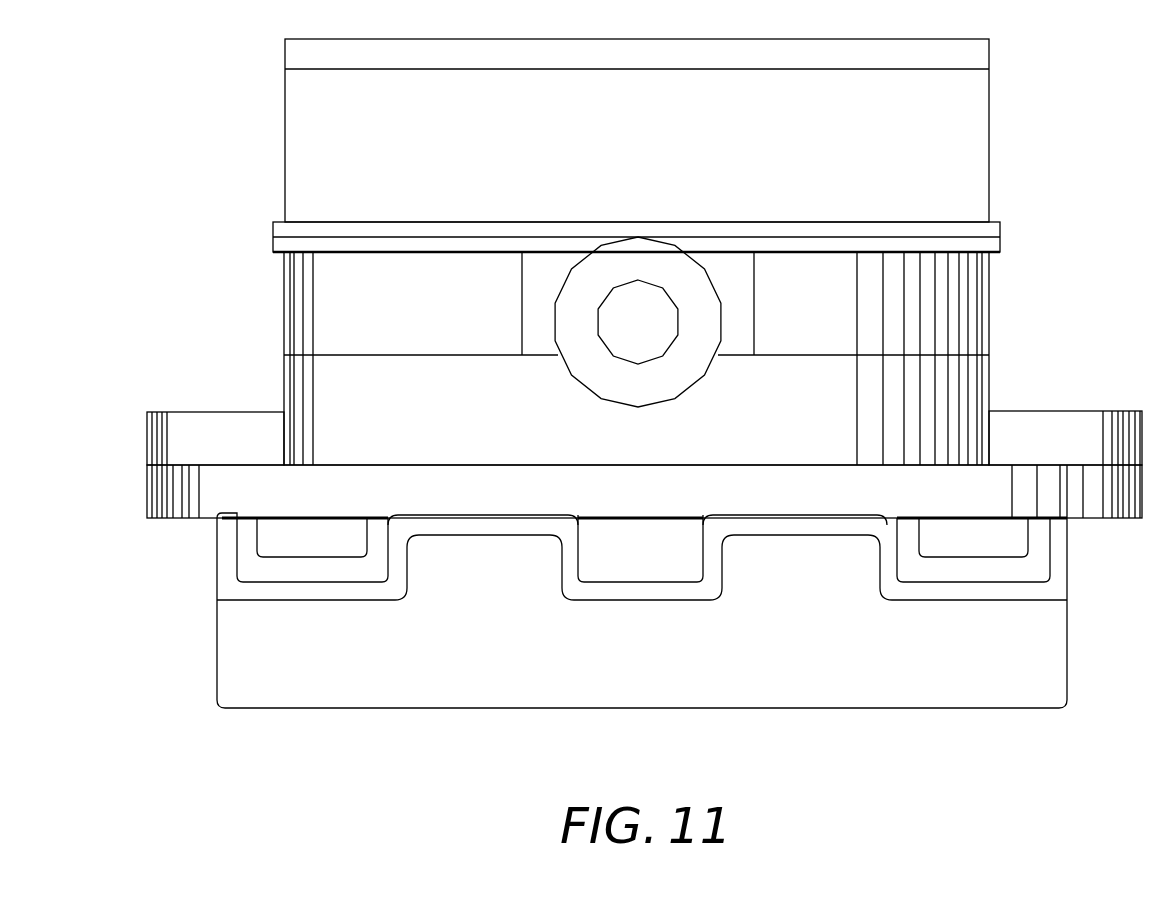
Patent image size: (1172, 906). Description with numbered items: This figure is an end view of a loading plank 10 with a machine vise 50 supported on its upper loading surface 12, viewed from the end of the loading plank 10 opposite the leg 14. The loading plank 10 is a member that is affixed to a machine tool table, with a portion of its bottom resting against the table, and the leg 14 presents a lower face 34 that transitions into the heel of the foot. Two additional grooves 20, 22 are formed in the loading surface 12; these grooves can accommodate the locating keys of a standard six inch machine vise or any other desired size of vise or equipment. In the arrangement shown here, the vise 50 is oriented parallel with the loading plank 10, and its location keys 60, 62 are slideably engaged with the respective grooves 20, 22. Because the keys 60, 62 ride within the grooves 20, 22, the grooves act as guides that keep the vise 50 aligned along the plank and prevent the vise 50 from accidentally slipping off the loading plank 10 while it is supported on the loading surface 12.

The machine vise 50 is at (168, 228).
The loading surface 12 is at (760, 515).
The leg 14 is at (1068, 676).
The loading plank 10 is at (1068, 590).
The groove 20 is at (353, 572).
The location key 60 is at (286, 553).
The lower face 34 is at (659, 660).
The groove 22 is at (1008, 570).
The location key 62 is at (943, 560).